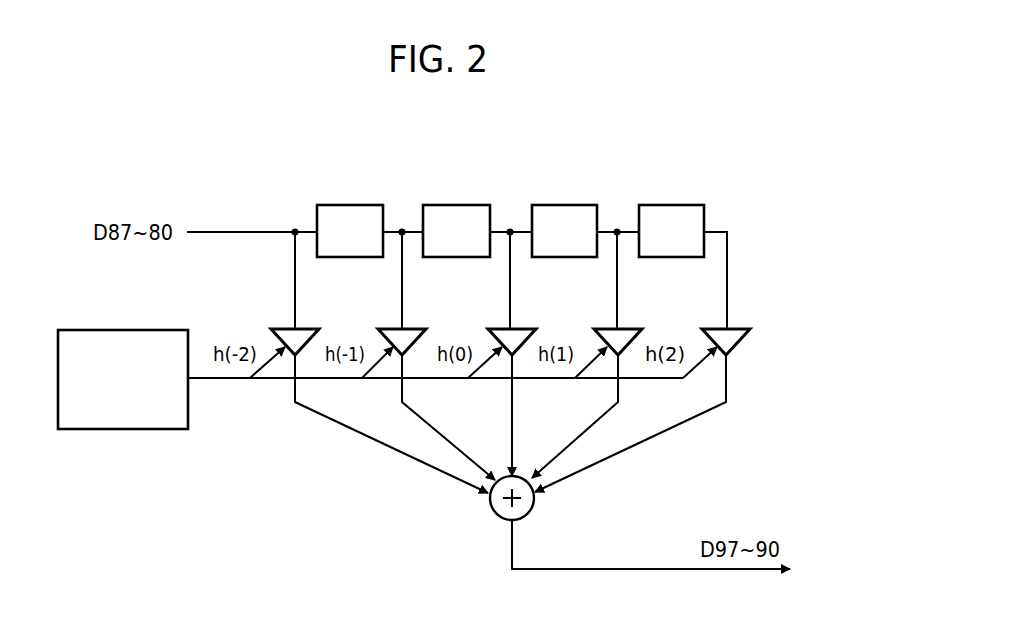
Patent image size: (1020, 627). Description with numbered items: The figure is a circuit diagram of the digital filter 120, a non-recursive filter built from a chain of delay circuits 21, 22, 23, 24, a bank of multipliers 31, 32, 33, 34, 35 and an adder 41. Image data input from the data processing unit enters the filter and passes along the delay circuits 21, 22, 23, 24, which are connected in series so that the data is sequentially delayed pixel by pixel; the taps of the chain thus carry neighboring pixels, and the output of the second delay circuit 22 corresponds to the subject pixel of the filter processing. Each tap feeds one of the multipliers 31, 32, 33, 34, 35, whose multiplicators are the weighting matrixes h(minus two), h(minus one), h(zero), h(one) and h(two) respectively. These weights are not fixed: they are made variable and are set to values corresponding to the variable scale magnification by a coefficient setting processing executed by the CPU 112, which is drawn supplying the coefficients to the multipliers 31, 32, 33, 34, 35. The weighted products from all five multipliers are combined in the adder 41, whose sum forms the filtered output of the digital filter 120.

The digital filter 120 is at (318, 140).
The CPU 112 is at (92, 329).
The delay circuit 21 is at (339, 257).
The second delay circuit 22 is at (446, 257).
The delay circuit 23 is at (556, 257).
The delay circuit 24 is at (662, 257).
The multiplier 31 is at (306, 328).
The multiplier 32 is at (413, 328).
The multiplier 33 is at (523, 328).
The multiplier 34 is at (627, 328).
The multiplier 35 is at (736, 328).
The adder 41 is at (535, 503).